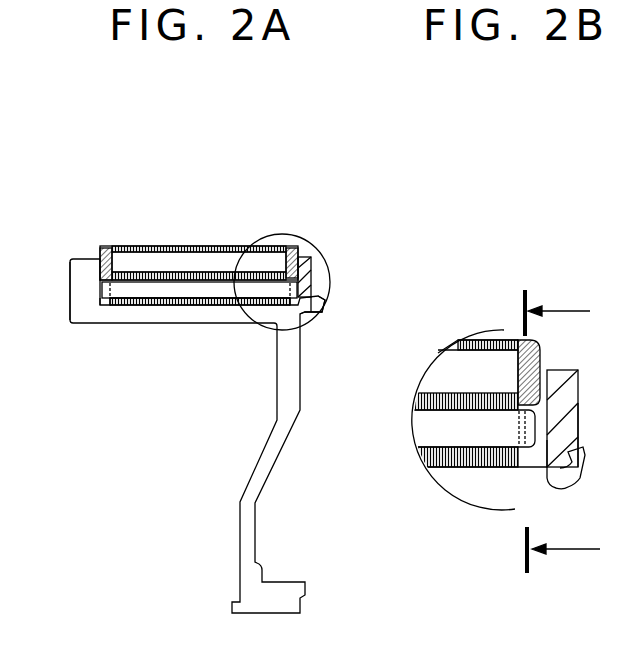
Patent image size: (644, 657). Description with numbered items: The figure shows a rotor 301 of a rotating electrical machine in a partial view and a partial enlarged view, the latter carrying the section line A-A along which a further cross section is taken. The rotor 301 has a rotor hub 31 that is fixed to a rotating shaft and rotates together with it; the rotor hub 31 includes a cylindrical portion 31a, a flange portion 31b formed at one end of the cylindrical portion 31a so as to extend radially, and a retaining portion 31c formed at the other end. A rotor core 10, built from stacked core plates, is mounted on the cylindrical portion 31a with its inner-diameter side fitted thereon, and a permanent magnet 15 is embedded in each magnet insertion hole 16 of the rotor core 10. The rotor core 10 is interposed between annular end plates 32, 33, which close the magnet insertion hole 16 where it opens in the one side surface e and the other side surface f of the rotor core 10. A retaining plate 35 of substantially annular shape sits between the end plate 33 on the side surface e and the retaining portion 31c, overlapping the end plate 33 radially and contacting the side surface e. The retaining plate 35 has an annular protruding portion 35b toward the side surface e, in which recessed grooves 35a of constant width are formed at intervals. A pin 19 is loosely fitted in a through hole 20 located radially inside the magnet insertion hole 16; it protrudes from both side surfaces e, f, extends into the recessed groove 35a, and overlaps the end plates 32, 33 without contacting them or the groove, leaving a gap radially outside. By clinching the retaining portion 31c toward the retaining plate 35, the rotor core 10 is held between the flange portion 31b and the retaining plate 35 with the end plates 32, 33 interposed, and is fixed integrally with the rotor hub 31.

In FIG. 2A, the rotor 301 is at (203, 190).
In FIG. 2A, the rotor core 10 is at (219, 245).
In FIG. 2B, the rotor core 10 is at (505, 337).
In FIG. 2A, the permanent magnet 15 is at (178, 258).
In FIG. 2B, the permanent magnet 15 is at (482, 370).
In FIG. 2A, the magnet insertion hole 16 is at (136, 250).
In FIG. 2B, the magnet insertion hole 16 is at (448, 354).
In FIG. 2A, the pin 19 is at (172, 290).
In FIG. 2B, the pin 19 is at (424, 428).
In FIG. 2A, the through hole 20 is at (145, 305).
In FIG. 2B, the through hole 20 is at (437, 465).
In FIG. 2A, the rotor hub 31 is at (290, 398).
In FIG. 2A, the cylindrical portion 31a is at (215, 315).
In FIG. 2A, the flange portion 31b is at (71, 272).
In FIG. 2A, the retaining portion 31c is at (322, 293).
In FIG. 2B, the retaining portion 31c is at (581, 460).
In FIG. 2A, the end plate 32 is at (100, 247).
In FIG. 2A, the end plate 33 is at (292, 250).
In FIG. 2B, the end plate 33 is at (534, 350).
In FIG. 2A, the retaining plate 35 is at (314, 259).
In FIG. 2B, the retaining plate 35 is at (560, 372).
In FIG. 2B, the recessed groove 35a is at (578, 440).
In FIG. 2B, the protruding portion 35b is at (548, 470).
In FIG. 2A, the one side surface e is at (310, 317).
In FIG. 2A, the other side surface f is at (100, 300).
In FIG. 2B, the section line A- A is at (558, 434).